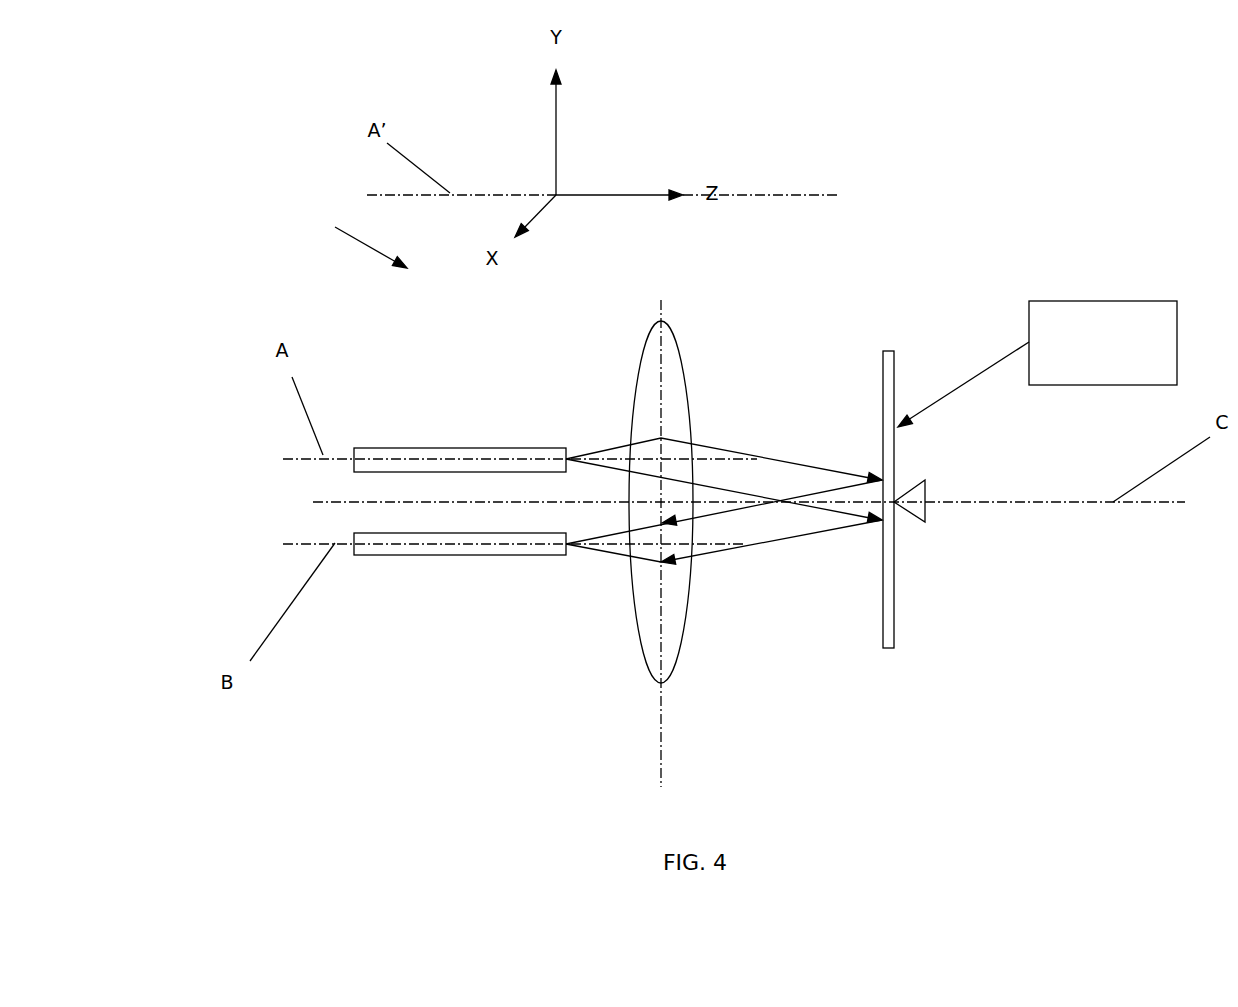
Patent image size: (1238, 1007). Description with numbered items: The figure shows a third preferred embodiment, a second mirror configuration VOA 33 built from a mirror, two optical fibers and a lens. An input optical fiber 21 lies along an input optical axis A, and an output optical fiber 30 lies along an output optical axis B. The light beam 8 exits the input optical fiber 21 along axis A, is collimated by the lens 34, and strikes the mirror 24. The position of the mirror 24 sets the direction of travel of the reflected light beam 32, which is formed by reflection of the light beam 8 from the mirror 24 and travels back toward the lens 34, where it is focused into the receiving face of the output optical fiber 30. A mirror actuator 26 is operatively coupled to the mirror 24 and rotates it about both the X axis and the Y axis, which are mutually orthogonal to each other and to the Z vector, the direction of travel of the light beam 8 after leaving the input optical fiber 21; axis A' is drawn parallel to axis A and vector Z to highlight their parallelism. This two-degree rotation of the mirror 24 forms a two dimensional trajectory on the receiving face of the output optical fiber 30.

The light beam 8 is at (615, 447).
The input optical fiber 21 is at (440, 443).
The mirror 24 is at (895, 597).
The mirror actuator 26 is at (1112, 302).
The output optical fiber 30 is at (480, 555).
The reflected light beam 32 is at (735, 553).
The second mirror configuration VOA 33 is at (345, 231).
The lens 34 is at (639, 390).